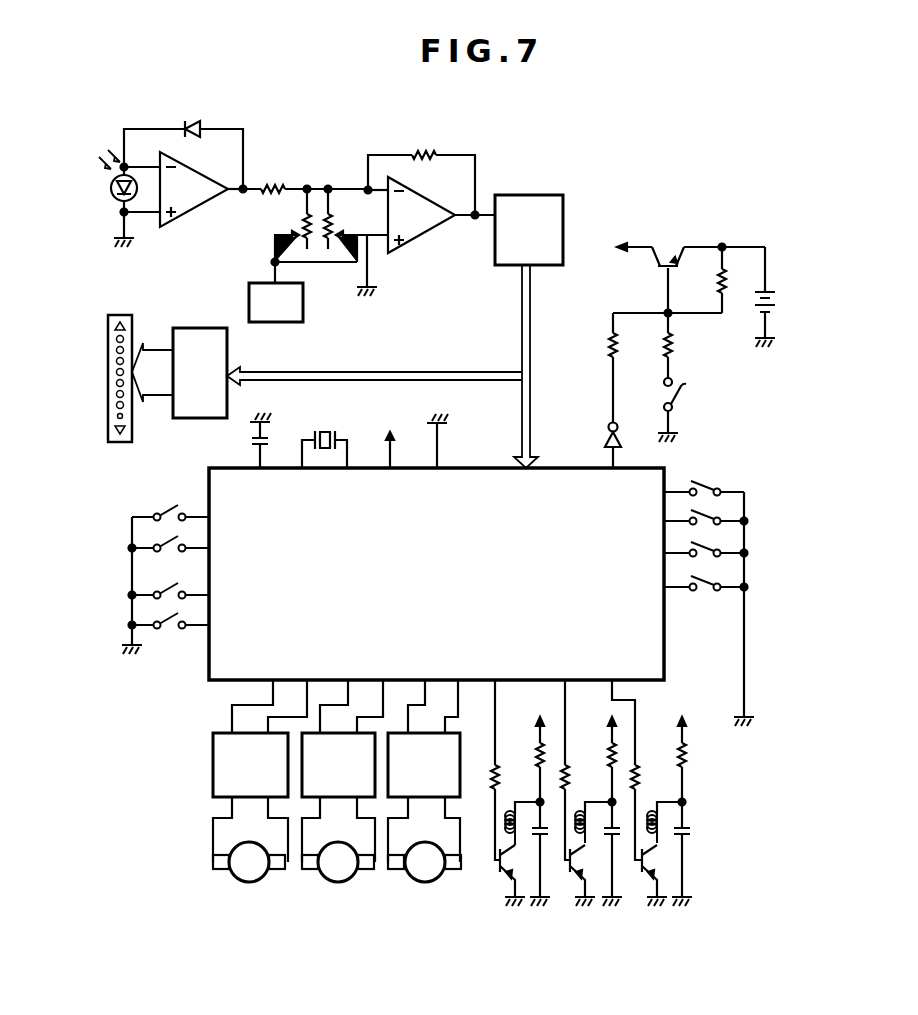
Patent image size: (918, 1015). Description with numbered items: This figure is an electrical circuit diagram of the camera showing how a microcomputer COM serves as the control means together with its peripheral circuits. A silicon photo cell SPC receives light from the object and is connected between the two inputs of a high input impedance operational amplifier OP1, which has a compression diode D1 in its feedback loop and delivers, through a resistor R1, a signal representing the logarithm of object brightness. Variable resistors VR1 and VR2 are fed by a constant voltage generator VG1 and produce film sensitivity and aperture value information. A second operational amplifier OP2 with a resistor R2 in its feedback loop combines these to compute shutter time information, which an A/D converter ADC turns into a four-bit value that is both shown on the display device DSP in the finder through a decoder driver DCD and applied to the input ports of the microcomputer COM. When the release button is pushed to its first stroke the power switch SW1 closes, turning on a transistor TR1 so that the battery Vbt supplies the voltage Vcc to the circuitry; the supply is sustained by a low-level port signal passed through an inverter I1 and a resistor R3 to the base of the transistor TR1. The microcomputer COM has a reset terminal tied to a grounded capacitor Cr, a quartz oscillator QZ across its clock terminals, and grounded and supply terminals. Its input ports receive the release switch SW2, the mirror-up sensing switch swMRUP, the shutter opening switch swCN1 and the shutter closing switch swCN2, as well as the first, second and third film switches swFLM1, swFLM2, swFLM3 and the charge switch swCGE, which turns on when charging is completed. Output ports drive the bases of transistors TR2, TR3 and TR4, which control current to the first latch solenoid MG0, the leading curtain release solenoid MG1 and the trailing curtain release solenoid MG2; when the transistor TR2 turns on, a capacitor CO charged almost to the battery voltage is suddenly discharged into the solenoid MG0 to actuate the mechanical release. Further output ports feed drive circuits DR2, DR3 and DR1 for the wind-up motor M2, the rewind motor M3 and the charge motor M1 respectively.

The silicon photo cell SPC is at (113, 195).
The compression diode D1 is at (194, 118).
The operational amplifier OP1 is at (201, 189).
The resistor R1 is at (273, 182).
The variable resistor VR1 is at (300, 220).
The variable resistor VR2 is at (337, 220).
The constant voltage generator VG1 is at (276, 292).
The operational amplifier OP2 is at (431, 215).
The resistor R2 is at (421, 148).
The A/D converter ADC is at (529, 331).
The decoder driver DCD is at (179, 373).
The display device DSP is at (118, 316).
The capacitor Cr is at (266, 440).
The quartz oscillator QZ is at (311, 433).
The transistor TR1 is at (662, 248).
The voltage Vcc is at (632, 260).
The battery Vbt is at (758, 303).
The resistor R3 is at (610, 351).
The inverter I1 is at (618, 429).
The power switch SW1 is at (688, 377).
The microcomputer COM is at (436, 574).
The release switch SW2 is at (167, 506).
The mirror-up sensing switch swMRUP is at (154, 538).
The shutter opening switch swCN1 is at (150, 586).
The shutter closing switch swCN2 is at (150, 619).
The first film switch swFLM1 is at (706, 486).
The second film switch swFLM2 is at (706, 515).
The third film switch swFLM3 is at (706, 546).
The charge switch swCGE is at (706, 578).
The drive circuit DR1 is at (424, 765).
The drive circuit DR2 is at (250, 765).
The drive circuit DR3 is at (338, 765).
The charge motor M1 is at (424, 862).
The wind-up motor M2 is at (249, 862).
The rewind motor M3 is at (338, 862).
The transistor TR4 is at (500, 882).
The transistor TR3 is at (576, 890).
The transistor TR2 is at (650, 890).
The trailing curtain release solenoid MG2 is at (516, 830).
The leading curtain release solenoid MG1 is at (586, 830).
The permanent magnet-equipped solenoid MG0 is at (658, 830).
The capacitor CO is at (692, 831).